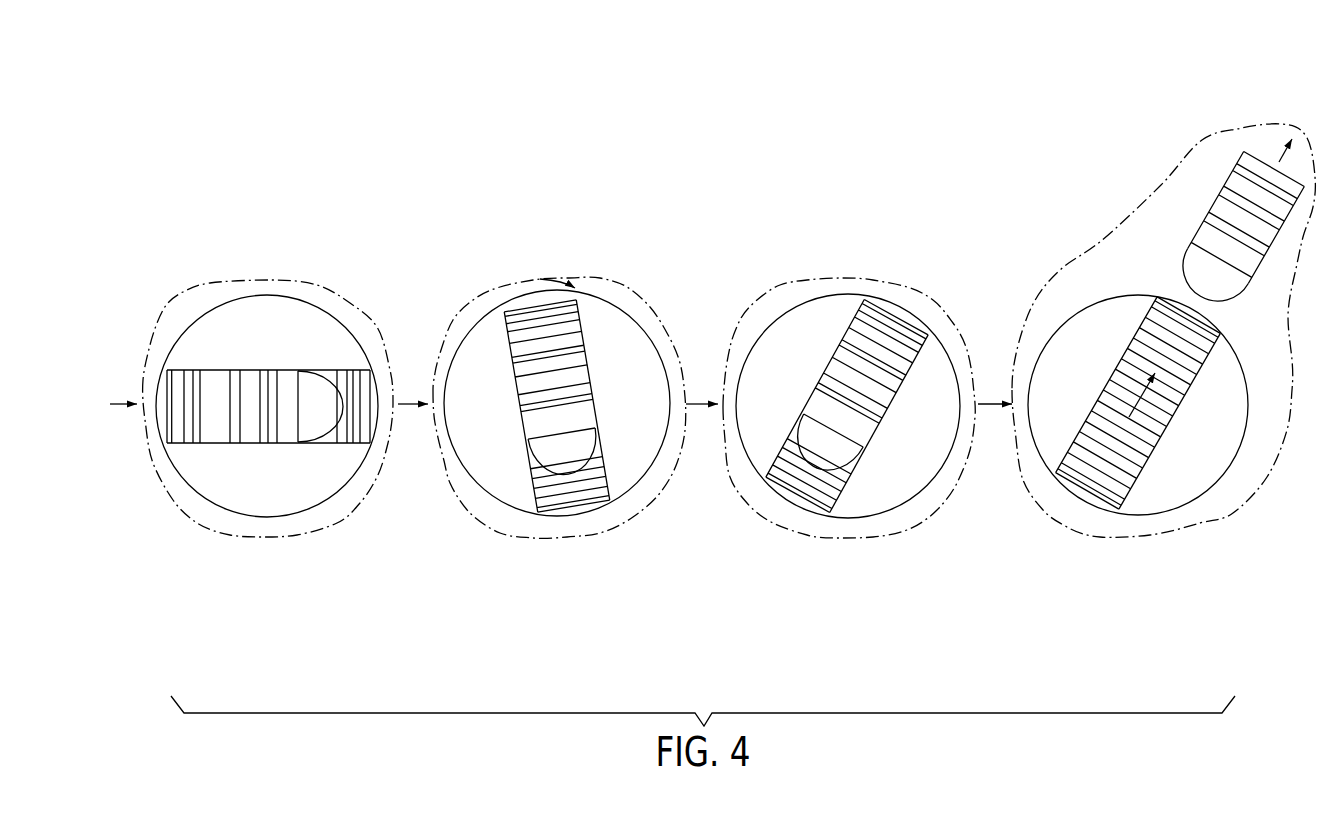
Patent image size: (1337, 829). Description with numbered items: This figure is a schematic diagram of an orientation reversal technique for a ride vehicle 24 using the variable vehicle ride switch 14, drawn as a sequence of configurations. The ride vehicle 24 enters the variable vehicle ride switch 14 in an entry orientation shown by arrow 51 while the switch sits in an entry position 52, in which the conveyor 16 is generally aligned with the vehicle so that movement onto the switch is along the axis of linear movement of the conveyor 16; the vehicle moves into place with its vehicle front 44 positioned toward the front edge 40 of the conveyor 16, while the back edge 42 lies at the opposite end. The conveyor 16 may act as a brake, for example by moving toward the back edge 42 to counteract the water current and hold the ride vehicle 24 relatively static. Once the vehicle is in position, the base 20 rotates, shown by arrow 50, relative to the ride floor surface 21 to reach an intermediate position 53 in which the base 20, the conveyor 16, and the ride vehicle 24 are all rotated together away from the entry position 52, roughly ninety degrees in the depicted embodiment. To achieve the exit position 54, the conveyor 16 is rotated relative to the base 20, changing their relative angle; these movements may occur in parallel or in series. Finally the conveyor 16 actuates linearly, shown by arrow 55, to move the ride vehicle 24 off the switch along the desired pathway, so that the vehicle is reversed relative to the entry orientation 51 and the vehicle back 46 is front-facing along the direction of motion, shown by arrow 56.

The variable vehicle ride switch 14 is at (183, 275).
The conveyor 16 is at (342, 369).
The base 20 is at (330, 444).
The ride floor surface 21 is at (217, 519).
The ride vehicle 24 is at (252, 370).
The front edge 40 is at (370, 369).
The back edge 42 is at (167, 385).
The vehicle front 44 is at (328, 395).
The vehicle back 46 is at (202, 445).
The arrow 50 is at (540, 279).
The entry orientation 51 is at (118, 405).
The entry position 52 is at (408, 406).
The intermediate position 53 is at (694, 404).
The exit position 54 is at (984, 404).
The arrow 55 is at (1161, 427).
The arrow 56 is at (1279, 162).